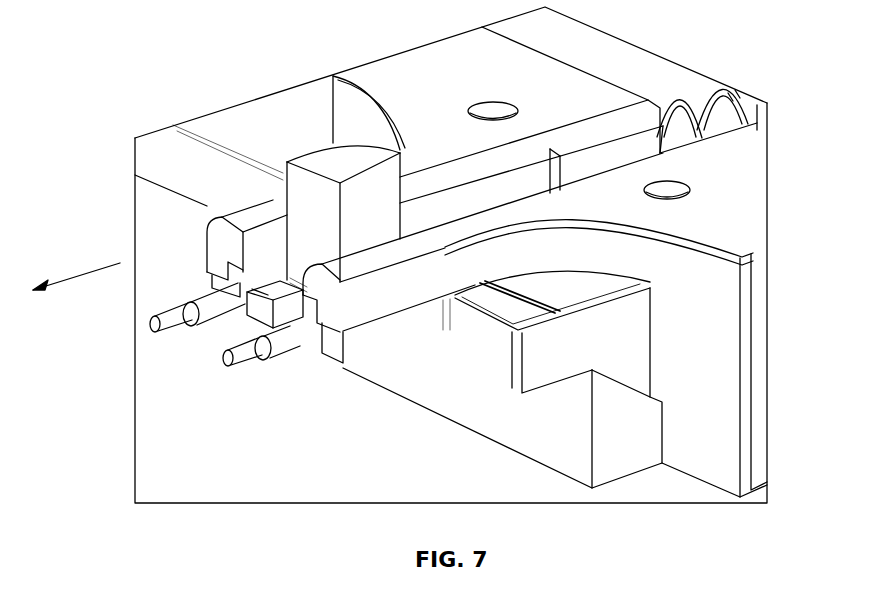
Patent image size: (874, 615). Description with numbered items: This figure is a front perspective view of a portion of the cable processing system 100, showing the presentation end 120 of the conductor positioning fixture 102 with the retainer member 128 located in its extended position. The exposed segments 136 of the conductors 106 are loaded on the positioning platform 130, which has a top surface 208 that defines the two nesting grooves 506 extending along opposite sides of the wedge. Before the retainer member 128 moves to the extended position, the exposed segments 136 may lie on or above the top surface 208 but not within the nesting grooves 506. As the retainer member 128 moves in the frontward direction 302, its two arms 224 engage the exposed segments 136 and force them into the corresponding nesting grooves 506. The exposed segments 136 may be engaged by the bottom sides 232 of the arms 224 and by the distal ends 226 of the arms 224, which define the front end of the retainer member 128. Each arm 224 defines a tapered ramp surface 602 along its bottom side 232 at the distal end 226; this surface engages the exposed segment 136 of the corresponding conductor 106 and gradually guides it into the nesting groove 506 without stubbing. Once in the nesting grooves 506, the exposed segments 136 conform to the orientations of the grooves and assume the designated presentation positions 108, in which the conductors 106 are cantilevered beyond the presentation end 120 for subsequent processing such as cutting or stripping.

The cable processing system 100 is at (256, 30).
The conductor positioning fixture 102 is at (527, 482).
The conductors 106 is at (255, 358).
The presentation positions 108 is at (148, 332).
The presentation end 120 is at (196, 272).
The retainer member 128 is at (432, 125).
The positioning platform 130 is at (547, 357).
The exposed segments 136 is at (201, 300).
The top surface 208 is at (281, 272).
The arms 224 is at (280, 280).
The distal ends 226 is at (223, 243).
The bottom side 232 is at (367, 327).
The frontward direction 302 is at (77, 277).
The nesting grooves 506 is at (263, 287).
The tapered ramp surface 602 is at (151, 325).